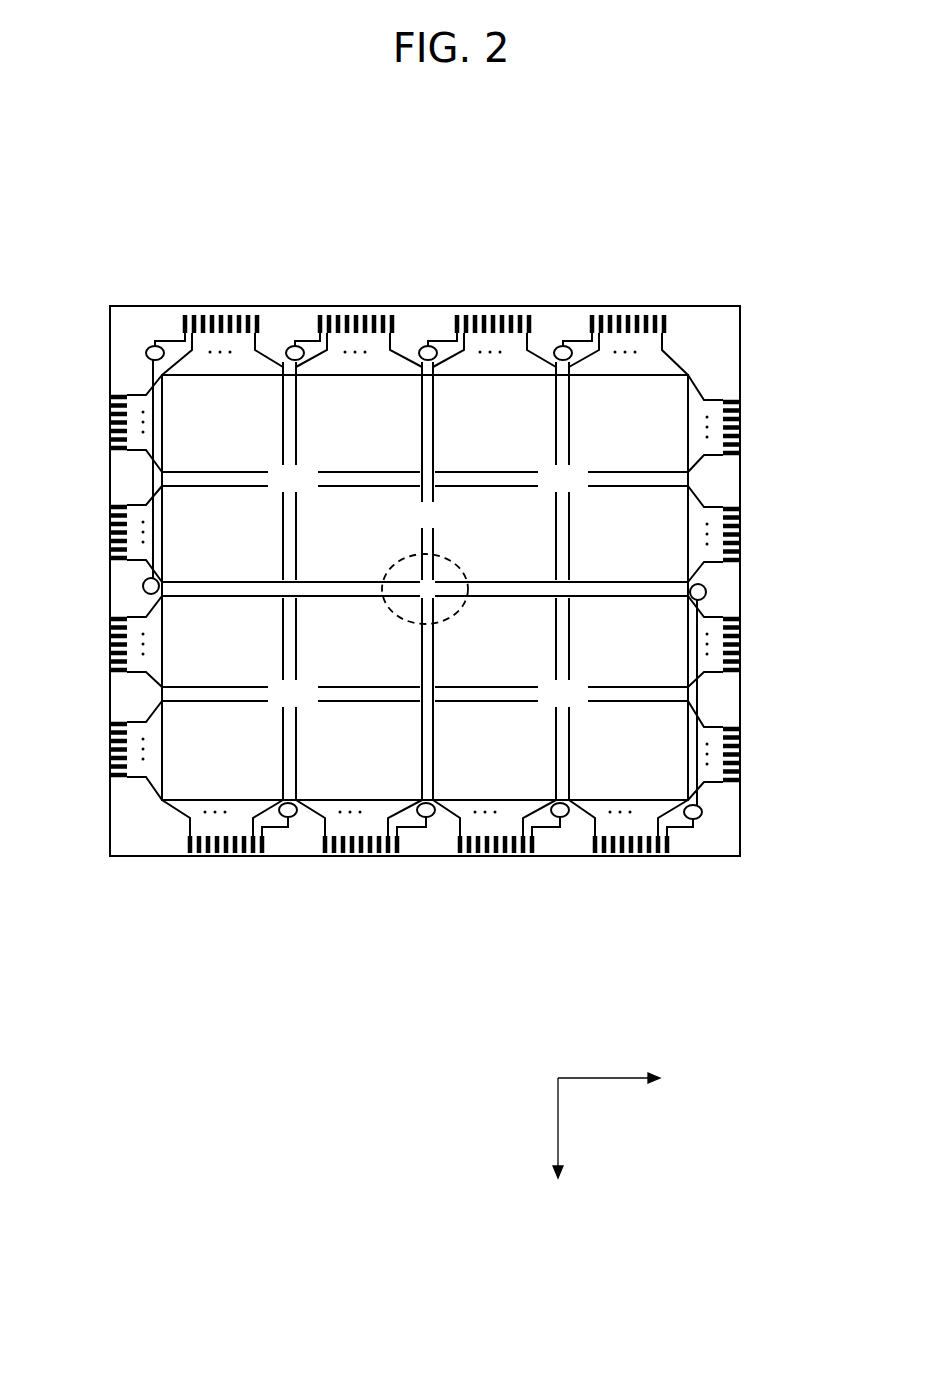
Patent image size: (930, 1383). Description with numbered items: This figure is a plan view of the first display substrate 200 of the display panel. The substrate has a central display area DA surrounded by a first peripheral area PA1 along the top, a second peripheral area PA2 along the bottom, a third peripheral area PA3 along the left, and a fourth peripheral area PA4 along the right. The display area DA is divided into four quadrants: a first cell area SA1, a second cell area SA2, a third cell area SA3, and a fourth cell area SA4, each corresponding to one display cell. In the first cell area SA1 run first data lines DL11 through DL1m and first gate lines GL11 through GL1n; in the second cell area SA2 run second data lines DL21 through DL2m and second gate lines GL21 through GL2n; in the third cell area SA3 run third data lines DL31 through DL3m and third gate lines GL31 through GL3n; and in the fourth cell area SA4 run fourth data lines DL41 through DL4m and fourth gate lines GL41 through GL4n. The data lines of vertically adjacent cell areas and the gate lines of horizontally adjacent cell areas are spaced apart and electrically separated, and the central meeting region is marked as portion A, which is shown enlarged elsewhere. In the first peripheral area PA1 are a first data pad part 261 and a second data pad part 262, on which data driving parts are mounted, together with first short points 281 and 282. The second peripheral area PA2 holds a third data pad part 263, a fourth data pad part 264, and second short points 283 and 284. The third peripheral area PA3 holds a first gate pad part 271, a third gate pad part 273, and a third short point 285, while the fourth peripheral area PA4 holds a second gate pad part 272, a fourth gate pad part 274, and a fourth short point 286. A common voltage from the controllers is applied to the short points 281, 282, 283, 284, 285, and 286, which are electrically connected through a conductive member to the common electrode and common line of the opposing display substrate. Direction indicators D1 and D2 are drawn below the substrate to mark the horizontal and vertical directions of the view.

The first display substrate 200 is at (411, 180).
The first data pad part 261 is at (226, 313).
The second data pad part 262 is at (632, 315).
The third data pad part 263 is at (232, 855).
The fourth data pad part 264 is at (630, 853).
The first gate pad part 271 is at (110, 430).
The second gate pad part 272 is at (740, 432).
The third gate pad part 273 is at (110, 752).
The fourth gate pad part 274 is at (740, 757).
The first short point 281 is at (155, 345).
The first short point 282 is at (428, 346).
The second short point 283 is at (283, 852).
The second short point 284 is at (558, 852).
The third short point 285 is at (142, 588).
The fourth short point 286 is at (707, 594).
The first peripheral area PA1 is at (410, 328).
The second peripheral area PA2 is at (438, 848).
The third peripheral area PA3 is at (115, 487).
The fourth peripheral area PA4 is at (740, 488).
The display area DA is at (412, 527).
The portion A is at (455, 565).
The first cell area SA1 is at (272, 490).
The second cell area SA2 is at (542, 490).
The third cell area SA3 is at (272, 706).
The fourth cell area SA4 is at (542, 706).
The first data line DL11 is at (165, 453).
The first data line DL1m is at (420, 398).
The second data line DL21 is at (434, 398).
The second data line DL2m is at (688, 455).
The third data line DL31 is at (165, 720).
The third data line DL3m is at (420, 782).
The fourth data line DL41 is at (434, 782).
The fourth data line DL4m is at (688, 723).
The first gate line GL11 is at (250, 377).
The first gate line GL1n is at (233, 580).
The second gate line GL21 is at (600, 377).
The second gate line GL2n is at (600, 580).
The third gate line GL31 is at (233, 598).
The third gate line GL3n is at (253, 798).
The fourth gate line GL41 is at (600, 598).
The fourth gate line GL4n is at (600, 798).
The first direction D1 is at (627, 1078).
The second direction D2 is at (558, 1143).